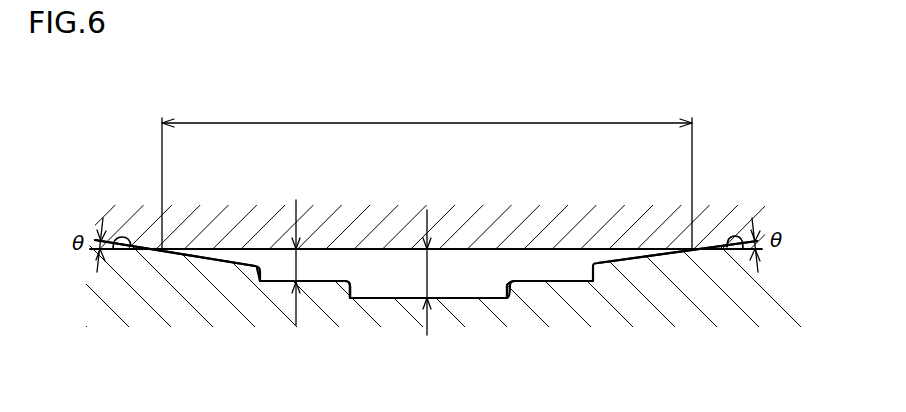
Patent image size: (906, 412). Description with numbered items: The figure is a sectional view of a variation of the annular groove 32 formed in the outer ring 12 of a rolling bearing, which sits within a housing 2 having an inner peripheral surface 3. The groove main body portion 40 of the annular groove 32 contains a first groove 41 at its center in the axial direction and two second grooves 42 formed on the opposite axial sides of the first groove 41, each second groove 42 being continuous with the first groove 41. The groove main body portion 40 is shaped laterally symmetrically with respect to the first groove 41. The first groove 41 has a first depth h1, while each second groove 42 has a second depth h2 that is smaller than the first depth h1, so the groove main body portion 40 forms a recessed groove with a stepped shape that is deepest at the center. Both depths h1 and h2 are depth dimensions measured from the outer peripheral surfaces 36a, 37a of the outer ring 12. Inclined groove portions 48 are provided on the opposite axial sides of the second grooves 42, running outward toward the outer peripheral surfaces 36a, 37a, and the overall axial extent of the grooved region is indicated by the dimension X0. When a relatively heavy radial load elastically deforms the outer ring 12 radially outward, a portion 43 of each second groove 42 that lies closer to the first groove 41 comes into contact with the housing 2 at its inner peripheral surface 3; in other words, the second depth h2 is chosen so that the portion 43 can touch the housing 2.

The housing 2 is at (137, 223).
The inner peripheral surface 3 is at (278, 250).
The outer ring 12 is at (620, 297).
The annular groove 32 is at (438, 277).
The outer peripheral surface 36a is at (121, 250).
The outer peripheral surface 37a is at (728, 249).
The groove main body portion 40 is at (403, 265).
The first groove 41 is at (387, 300).
The second groove 42 is at (317, 280).
The portion 43 is at (348, 297).
The inclined groove portion 48 is at (225, 258).
The width dimension X0 is at (427, 172).
The first depth h1 is at (440, 282).
The second depth h2 is at (309, 273).